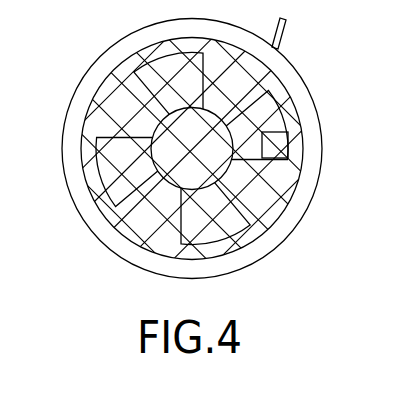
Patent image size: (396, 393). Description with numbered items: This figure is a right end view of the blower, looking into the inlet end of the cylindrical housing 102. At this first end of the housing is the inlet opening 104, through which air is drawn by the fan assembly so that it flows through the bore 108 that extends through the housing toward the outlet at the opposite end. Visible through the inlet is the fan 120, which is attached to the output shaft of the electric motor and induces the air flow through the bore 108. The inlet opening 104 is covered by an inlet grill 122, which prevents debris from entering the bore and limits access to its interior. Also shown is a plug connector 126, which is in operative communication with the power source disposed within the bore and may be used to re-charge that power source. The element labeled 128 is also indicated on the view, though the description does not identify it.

The cylindrical housing 102 is at (312, 97).
The inlet opening 104 is at (258, 205).
The bore 108 is at (261, 212).
The fan 120 is at (213, 233).
The inlet grill 122 is at (128, 88).
The plug connector 126 is at (288, 145).
The tab 128 is at (320, 8).